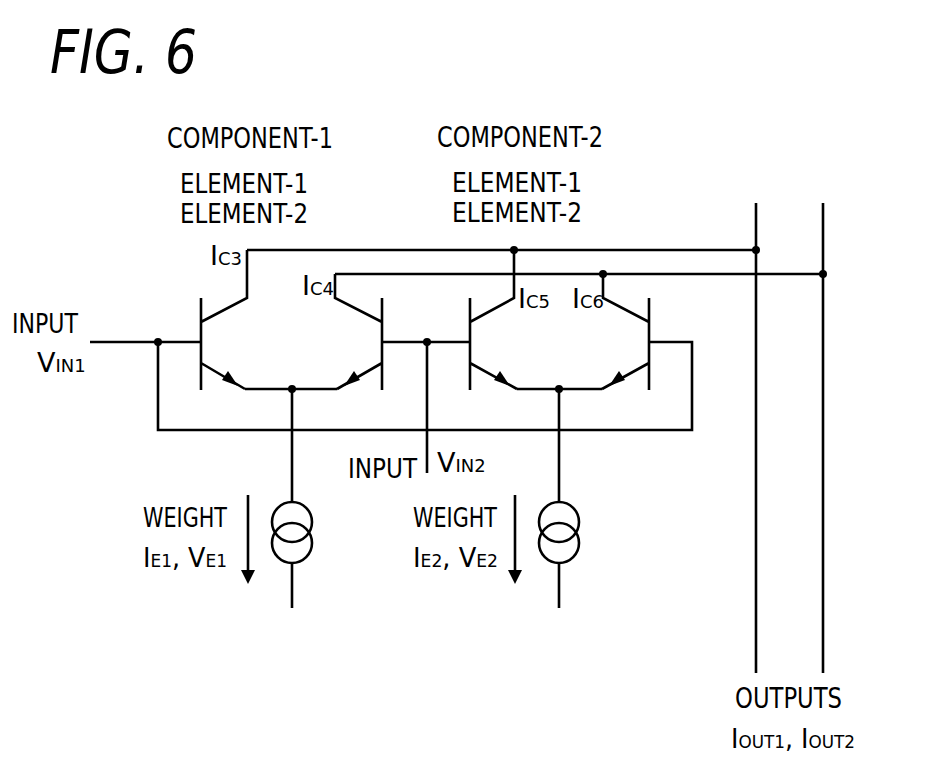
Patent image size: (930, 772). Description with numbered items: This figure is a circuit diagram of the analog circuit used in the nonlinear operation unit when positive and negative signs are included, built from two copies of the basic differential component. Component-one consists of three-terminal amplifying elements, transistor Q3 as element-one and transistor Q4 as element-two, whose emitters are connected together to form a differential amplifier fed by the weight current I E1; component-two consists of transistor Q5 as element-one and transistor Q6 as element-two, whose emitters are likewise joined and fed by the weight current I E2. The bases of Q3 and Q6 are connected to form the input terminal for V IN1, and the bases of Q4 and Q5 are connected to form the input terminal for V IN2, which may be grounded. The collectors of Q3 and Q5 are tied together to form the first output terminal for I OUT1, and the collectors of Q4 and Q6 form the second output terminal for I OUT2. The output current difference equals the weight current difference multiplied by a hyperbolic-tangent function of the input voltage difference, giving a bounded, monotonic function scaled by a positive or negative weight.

The transistor Q3 is at (229, 320).
The transistor Q4 is at (357, 332).
The transistor Q5 is at (497, 320).
The transistor Q6 is at (624, 332).